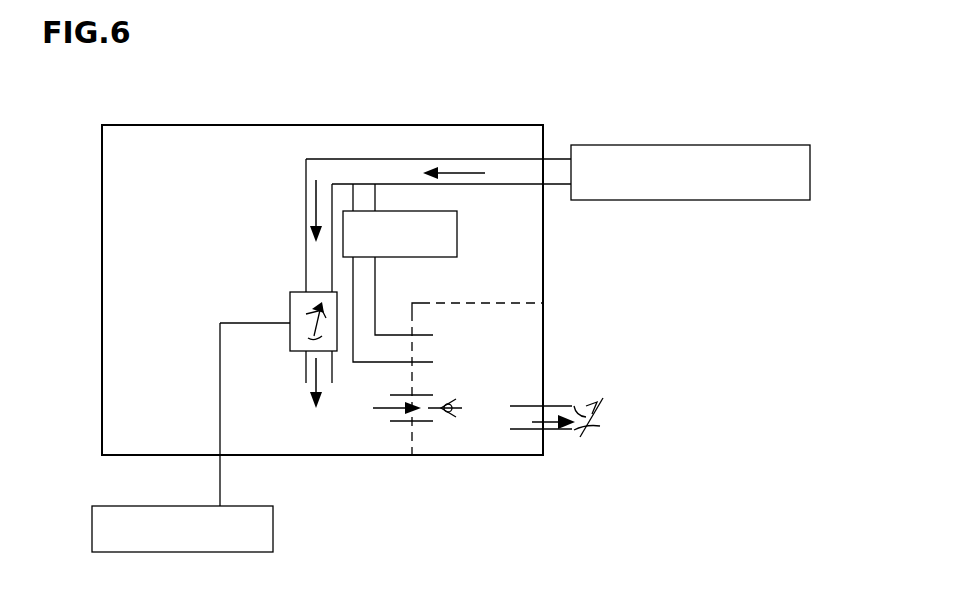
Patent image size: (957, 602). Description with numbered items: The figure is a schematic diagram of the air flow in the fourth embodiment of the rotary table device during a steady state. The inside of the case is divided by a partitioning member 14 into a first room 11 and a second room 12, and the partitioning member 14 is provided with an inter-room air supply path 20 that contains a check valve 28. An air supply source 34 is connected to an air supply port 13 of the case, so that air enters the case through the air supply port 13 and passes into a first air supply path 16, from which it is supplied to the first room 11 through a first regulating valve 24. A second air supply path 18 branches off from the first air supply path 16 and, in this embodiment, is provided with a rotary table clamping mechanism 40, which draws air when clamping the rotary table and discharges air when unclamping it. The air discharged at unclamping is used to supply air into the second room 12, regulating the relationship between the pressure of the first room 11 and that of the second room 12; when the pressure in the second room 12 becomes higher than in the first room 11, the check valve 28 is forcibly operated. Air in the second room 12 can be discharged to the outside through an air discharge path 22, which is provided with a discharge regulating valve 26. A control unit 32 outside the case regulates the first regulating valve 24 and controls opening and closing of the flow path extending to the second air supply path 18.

The first room 11 is at (100, 400).
The second room 12 is at (498, 457).
The air supply port 13 is at (552, 157).
The partitioning member 14 is at (412, 433).
The first air supply path 16 is at (305, 235).
The second air supply path 18 is at (376, 300).
The inter-room air supply path 20 is at (402, 422).
The air discharge path 22 is at (553, 407).
The first regulating valve 24 is at (290, 300).
The discharge regulating valve 26 is at (598, 413).
The check valve 28 is at (457, 406).
The control unit 32 is at (192, 551).
The air supply source 34 is at (608, 143).
The rotary table clamping mechanism 40 is at (470, 225).